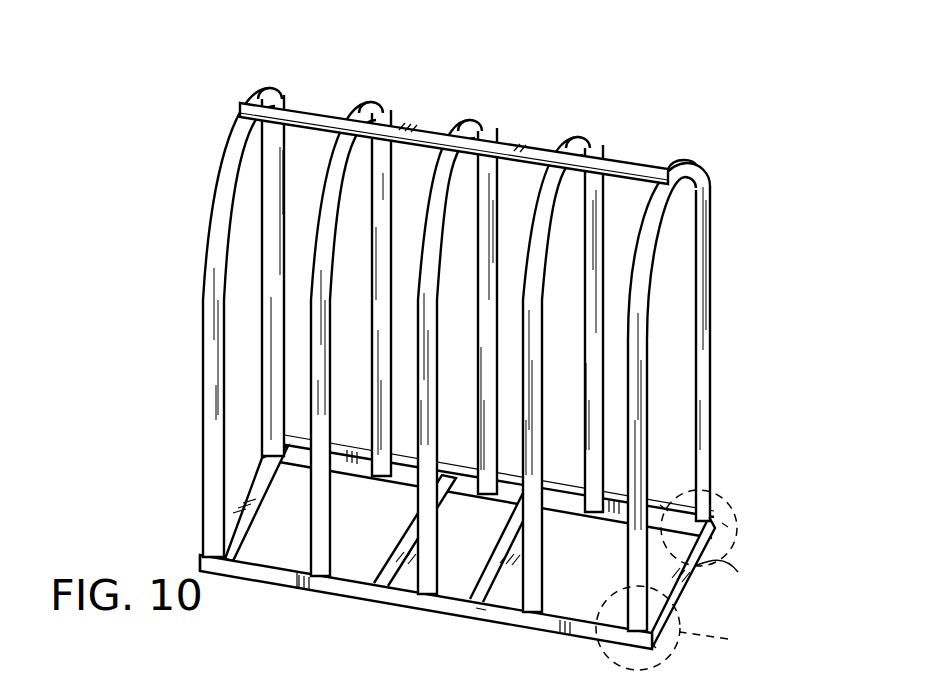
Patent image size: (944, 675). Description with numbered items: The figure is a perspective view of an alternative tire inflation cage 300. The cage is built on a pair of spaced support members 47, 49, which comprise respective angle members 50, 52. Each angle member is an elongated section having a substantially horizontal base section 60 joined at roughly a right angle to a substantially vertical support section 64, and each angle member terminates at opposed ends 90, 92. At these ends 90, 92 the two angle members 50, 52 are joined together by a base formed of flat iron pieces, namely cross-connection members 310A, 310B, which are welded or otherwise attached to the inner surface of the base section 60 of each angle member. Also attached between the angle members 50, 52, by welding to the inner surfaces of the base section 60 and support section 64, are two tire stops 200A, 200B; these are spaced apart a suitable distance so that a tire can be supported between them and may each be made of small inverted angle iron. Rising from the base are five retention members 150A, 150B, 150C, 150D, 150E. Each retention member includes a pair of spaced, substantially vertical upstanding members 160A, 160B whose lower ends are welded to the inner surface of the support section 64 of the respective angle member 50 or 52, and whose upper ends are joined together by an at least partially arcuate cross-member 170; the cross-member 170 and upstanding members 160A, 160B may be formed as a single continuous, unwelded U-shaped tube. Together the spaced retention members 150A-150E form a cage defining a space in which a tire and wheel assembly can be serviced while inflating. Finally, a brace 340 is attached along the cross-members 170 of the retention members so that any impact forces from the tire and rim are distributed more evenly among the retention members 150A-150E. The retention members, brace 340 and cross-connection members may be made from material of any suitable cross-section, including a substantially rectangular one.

The tire inflation cage 300 is at (686, 107).
The brace 340 is at (257, 98).
The retention member 150A is at (680, 163).
The retention member 150B is at (582, 152).
The retention member 150C is at (475, 118).
The retention member 150D is at (386, 109).
The retention member 150E is at (252, 100).
The upstanding member 160A is at (213, 284).
The upstanding member 160B is at (278, 178).
The cross-member 170 is at (230, 152).
The support member 49 is at (562, 488).
The base section 60 is at (632, 540).
The angle member 50 is at (248, 582).
The cross-connection member 310A is at (692, 570).
The cross-connection member 310B is at (253, 497).
The tire stop 200A is at (503, 566).
The tire stop 200B is at (385, 557).
The end 92 is at (264, 443).
The support section 64 is at (308, 588).
The support member 47 is at (480, 610).
The end 90 is at (713, 523).
The angle member 52 is at (727, 525).